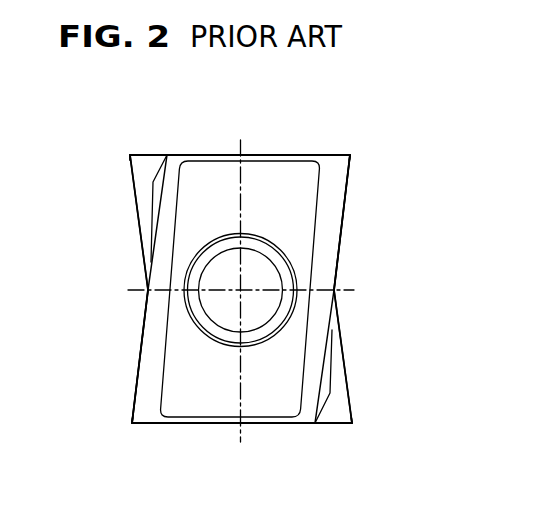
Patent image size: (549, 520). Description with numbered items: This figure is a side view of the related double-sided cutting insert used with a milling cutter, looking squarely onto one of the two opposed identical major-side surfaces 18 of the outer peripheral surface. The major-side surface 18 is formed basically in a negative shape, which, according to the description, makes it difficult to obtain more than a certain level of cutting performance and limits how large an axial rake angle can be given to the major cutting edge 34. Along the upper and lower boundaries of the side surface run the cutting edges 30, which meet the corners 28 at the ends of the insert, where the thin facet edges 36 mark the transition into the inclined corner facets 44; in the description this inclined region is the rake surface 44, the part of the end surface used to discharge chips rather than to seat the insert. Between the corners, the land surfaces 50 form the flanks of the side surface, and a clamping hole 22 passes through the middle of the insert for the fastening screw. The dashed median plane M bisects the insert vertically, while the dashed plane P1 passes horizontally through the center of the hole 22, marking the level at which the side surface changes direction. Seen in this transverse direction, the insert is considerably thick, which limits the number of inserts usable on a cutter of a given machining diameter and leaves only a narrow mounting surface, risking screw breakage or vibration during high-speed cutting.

The major-side surface 18 is at (305, 198).
The clamping hole 22 is at (279, 265).
The corner 28 is at (130, 156).
The cutting edge 30 is at (165, 155).
The major cutting edge 34 is at (342, 222).
The facet edge 36 is at (147, 155).
The rake surface 44 is at (145, 199).
The land surface 50 is at (150, 365).
The median plane M is at (242, 150).
The plane P1 is at (347, 288).